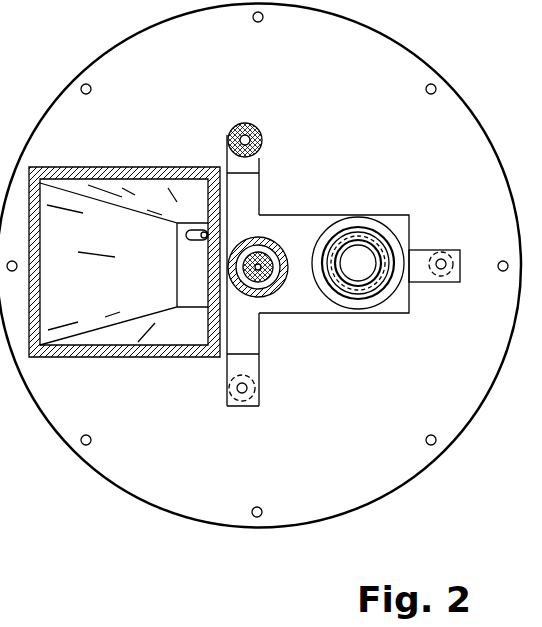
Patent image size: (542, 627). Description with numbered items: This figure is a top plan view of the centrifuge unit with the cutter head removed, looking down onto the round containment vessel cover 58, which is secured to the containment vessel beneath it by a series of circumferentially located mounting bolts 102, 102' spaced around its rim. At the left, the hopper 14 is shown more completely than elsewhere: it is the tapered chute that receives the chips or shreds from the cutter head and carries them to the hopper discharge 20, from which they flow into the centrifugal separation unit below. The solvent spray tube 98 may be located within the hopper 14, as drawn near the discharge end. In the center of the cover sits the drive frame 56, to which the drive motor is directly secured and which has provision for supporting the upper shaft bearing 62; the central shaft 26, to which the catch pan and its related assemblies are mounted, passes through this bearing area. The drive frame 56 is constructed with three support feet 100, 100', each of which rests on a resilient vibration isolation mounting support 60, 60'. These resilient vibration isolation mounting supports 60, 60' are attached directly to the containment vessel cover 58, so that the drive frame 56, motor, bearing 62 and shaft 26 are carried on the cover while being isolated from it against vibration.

The hopper 14 is at (166, 167).
The hopper discharge 20 is at (188, 285).
The central shaft 26 is at (276, 275).
The drive frame 56 is at (380, 316).
The containment vessel cover 58 is at (352, 411).
The resilient vibration isolation mounting support 60 is at (257, 132).
The resilient vibration isolation mounting support 60' is at (335, 322).
The upper shaft bearing 62 is at (280, 258).
The solvent spray tube 98 is at (190, 240).
The support foot 100 is at (268, 270).
The support foot 100' is at (383, 311).
The mounting bolt 102 is at (77, 264).
The mounting bolt 102' is at (380, 264).